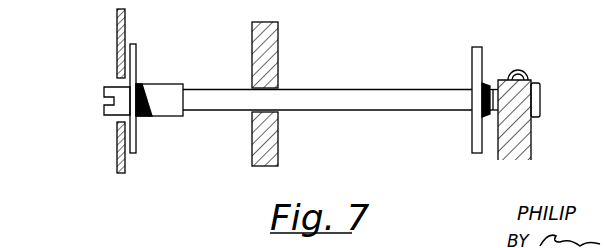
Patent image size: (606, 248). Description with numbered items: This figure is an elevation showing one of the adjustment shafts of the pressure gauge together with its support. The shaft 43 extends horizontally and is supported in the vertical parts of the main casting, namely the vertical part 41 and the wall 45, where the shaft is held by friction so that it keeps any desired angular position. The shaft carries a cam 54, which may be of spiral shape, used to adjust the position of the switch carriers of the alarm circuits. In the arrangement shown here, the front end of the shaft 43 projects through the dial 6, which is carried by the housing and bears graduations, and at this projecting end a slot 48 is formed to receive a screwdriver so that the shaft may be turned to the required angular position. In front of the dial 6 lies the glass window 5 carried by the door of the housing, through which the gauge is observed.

The dial 6 is at (125, 20).
The glass window 5 is at (135, 53).
The slot 48 is at (110, 99).
The shaft 43 is at (347, 101).
The vertical part of the casting 41 is at (268, 50).
The cam 54 is at (477, 64).
The wall 45 is at (521, 143).